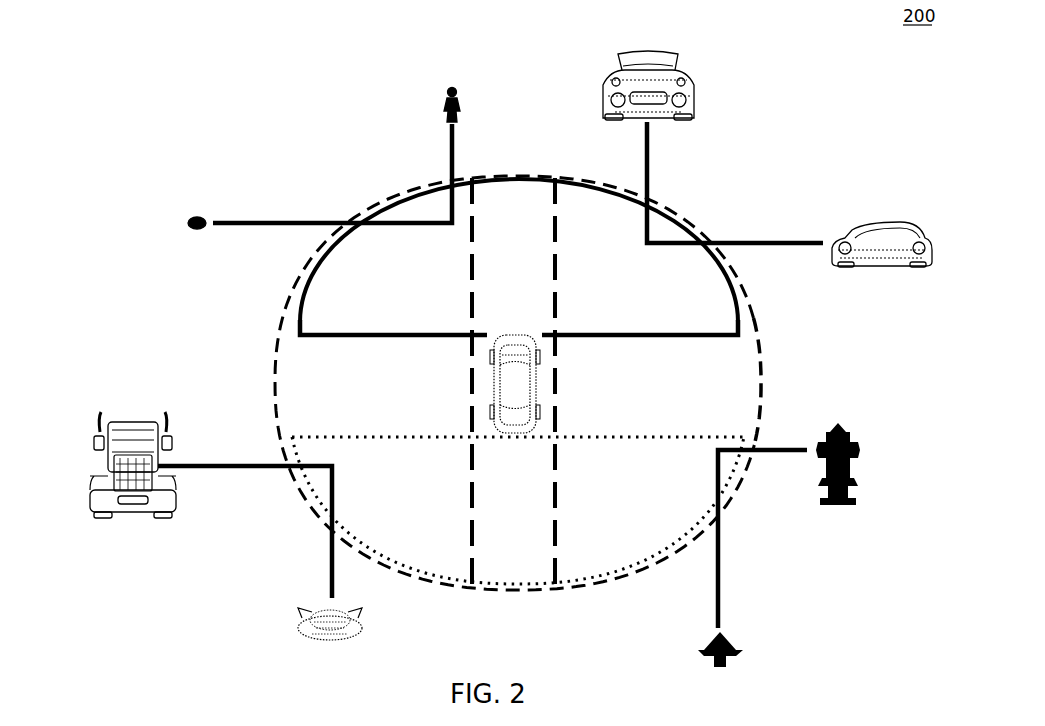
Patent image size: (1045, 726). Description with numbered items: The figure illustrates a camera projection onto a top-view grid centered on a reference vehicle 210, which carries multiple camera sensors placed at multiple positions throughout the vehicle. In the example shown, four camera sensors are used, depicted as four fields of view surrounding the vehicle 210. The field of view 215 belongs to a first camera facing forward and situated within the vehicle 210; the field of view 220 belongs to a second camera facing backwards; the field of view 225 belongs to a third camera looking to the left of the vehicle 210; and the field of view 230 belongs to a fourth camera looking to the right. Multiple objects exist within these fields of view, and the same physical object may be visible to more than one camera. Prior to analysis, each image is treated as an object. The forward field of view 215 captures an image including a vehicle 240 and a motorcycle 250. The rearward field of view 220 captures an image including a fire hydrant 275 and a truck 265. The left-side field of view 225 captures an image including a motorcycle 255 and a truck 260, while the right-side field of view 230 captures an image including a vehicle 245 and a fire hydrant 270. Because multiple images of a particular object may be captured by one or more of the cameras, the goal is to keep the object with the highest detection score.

The reference vehicle 210 is at (536, 370).
The field of view 215 is at (742, 316).
The field of view 220 is at (290, 440).
The field of view 225 is at (285, 307).
The field of view 230 is at (766, 378).
The vehicle 240 is at (697, 82).
The vehicle 245 is at (890, 264).
The motorcycle 250 is at (447, 108).
The motorcycle 255 is at (183, 222).
The truck 260 is at (100, 436).
The truck 265 is at (295, 625).
The fire hydrant 270 is at (848, 500).
The fire hydrant 275 is at (743, 648).